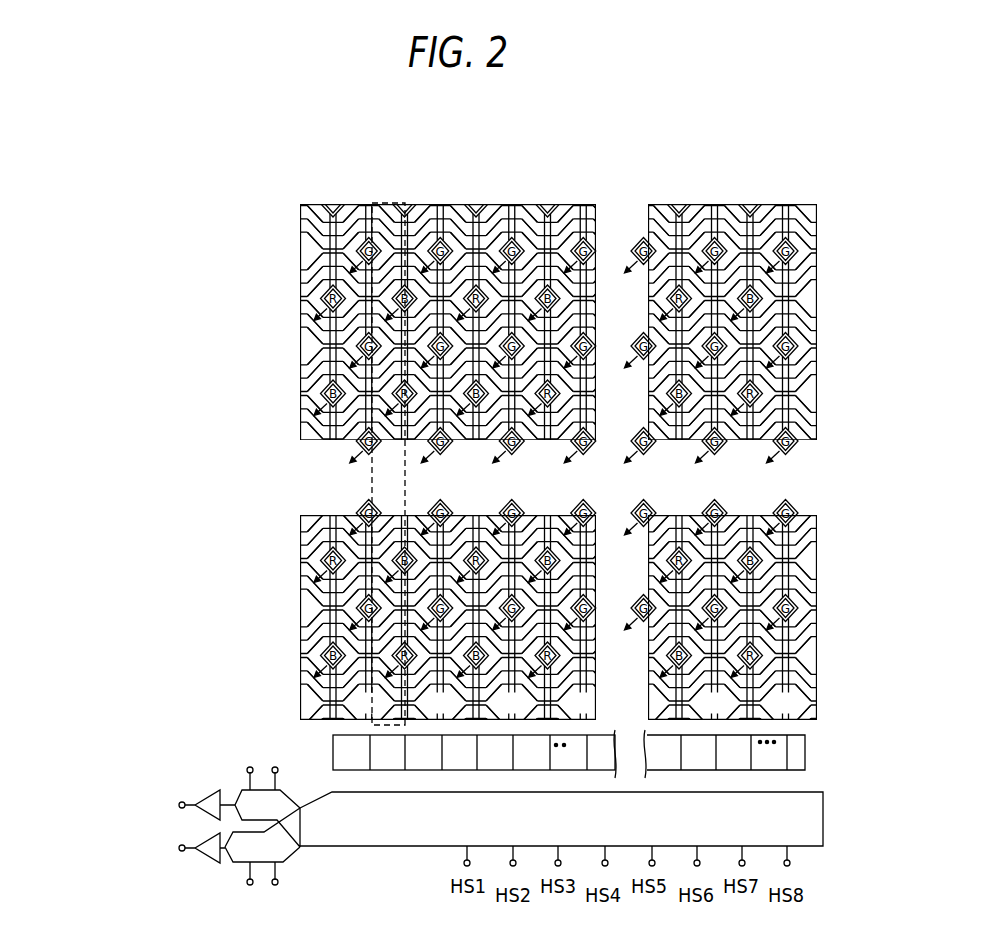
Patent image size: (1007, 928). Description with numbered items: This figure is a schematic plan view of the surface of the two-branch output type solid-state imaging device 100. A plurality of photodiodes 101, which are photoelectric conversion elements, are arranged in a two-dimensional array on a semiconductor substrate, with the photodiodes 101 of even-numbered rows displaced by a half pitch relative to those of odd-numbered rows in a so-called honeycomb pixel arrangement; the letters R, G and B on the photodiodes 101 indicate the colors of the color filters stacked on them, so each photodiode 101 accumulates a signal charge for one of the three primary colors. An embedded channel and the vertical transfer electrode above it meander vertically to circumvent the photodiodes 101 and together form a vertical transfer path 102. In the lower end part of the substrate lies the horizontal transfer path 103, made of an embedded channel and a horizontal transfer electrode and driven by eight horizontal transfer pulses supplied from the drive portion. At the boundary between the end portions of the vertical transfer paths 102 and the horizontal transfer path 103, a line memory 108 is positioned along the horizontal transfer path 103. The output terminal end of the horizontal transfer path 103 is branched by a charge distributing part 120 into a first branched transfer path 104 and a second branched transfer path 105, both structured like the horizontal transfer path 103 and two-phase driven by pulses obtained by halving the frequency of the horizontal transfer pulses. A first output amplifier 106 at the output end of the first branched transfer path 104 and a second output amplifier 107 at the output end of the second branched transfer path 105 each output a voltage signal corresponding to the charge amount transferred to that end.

The solid-state imaging device 100 is at (559, 462).
The photodiode 101 is at (453, 222).
The vertical transfer path 102 is at (397, 440).
The horizontal transfer path 103 is at (824, 818).
The first branched transfer path 104 is at (285, 797).
The second branched transfer path 105 is at (290, 856).
The first output amplifier 106 is at (210, 793).
The second output amplifier 107 is at (210, 860).
The line memory 108 is at (806, 752).
The charge distributing part 120 is at (297, 828).